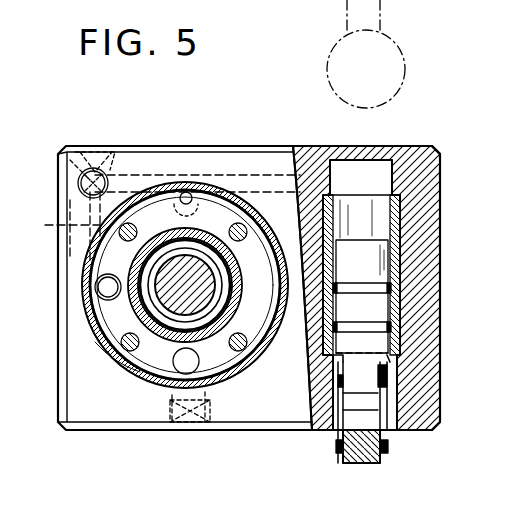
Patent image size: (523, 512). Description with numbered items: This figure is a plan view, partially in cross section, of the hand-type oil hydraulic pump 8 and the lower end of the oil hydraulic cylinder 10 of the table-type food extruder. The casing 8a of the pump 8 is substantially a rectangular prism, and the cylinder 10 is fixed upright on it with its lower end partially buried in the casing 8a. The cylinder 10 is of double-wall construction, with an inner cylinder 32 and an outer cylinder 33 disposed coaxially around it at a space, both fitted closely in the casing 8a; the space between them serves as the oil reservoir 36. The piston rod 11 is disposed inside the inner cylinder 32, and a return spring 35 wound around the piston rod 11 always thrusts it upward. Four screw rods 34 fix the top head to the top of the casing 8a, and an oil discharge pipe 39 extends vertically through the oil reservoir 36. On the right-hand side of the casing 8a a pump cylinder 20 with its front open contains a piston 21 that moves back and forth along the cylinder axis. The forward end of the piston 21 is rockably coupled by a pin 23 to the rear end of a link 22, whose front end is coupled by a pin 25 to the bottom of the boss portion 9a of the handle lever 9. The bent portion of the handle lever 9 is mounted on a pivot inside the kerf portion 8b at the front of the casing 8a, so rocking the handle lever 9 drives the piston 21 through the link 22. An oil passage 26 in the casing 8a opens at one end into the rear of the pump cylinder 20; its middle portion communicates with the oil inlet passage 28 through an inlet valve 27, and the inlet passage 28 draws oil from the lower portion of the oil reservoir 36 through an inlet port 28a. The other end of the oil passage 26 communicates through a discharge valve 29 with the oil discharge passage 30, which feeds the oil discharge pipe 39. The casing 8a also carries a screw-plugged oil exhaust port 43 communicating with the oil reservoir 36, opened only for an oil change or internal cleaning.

The hand-type oil hydraulic pump 8 is at (440, 163).
The casing 8a is at (395, 152).
The kerf portion 8b is at (333, 428).
The handle lever 9 is at (380, 10).
The boss portion 9a is at (360, 455).
The oil hydraulic cylinder 10 is at (68, 392).
The piston rod 11 is at (205, 310).
The pump cylinder 20 is at (395, 204).
The piston 21 is at (380, 258).
The link 22 is at (392, 420).
The pin 23 is at (392, 374).
The pin 25 is at (388, 450).
The oil passage 26 is at (305, 175).
The inlet valve 27 is at (191, 200).
The oil inlet passage 28 is at (189, 192).
The inlet port 28a is at (166, 190).
The discharge valve 29 is at (97, 168).
The oil discharge passage 30 is at (66, 226).
The inner cylinder 32 is at (137, 300).
The outer cylinder 33 is at (93, 342).
The screw rods 34 is at (133, 231).
The return spring 35 is at (228, 284).
The oil reservoir 36 is at (142, 377).
The oil discharge pipe 39 is at (95, 290).
The oil exhaust port 43 is at (208, 402).